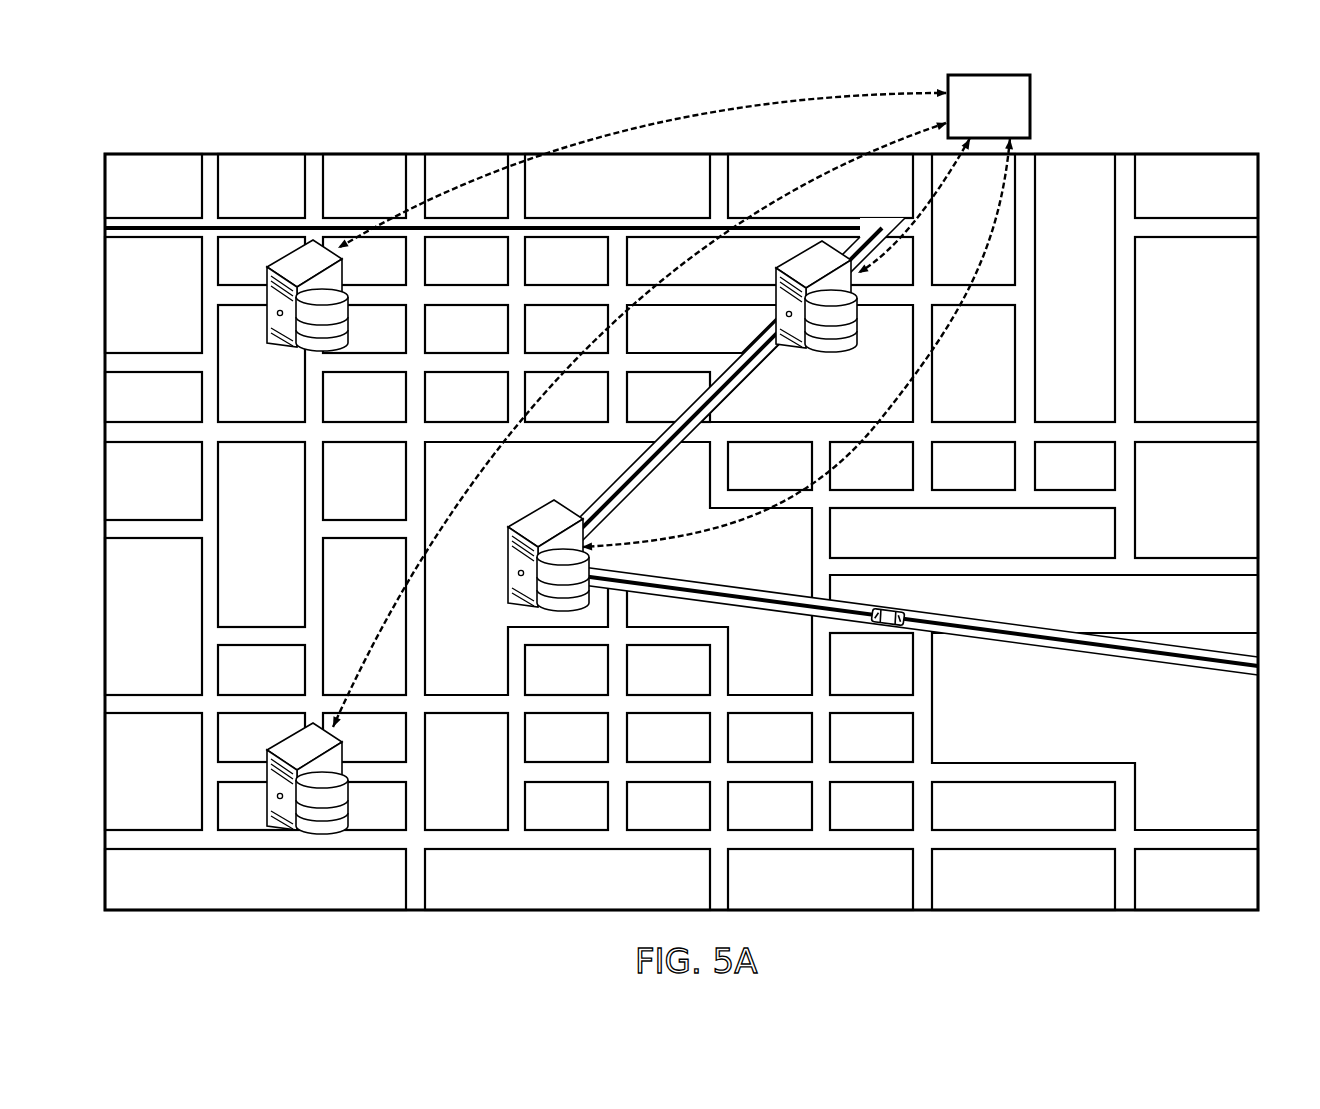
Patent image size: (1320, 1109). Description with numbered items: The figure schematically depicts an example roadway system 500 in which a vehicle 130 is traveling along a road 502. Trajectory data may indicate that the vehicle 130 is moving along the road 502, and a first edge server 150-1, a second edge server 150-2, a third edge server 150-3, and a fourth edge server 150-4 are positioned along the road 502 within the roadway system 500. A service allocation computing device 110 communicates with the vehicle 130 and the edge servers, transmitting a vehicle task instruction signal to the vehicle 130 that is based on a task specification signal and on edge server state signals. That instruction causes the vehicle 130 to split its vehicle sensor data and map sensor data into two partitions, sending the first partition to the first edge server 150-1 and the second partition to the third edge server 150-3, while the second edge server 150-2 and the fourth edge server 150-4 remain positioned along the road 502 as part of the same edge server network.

The service allocation computing device 110 is at (1030, 110).
The vehicle 130 is at (887, 610).
The first edge server 150-1 is at (506, 558).
The second edge server 150-2 is at (828, 350).
The third edge server 150-3 is at (283, 345).
The fourth edge server 150-4 is at (283, 823).
The roadway system 500 is at (1197, 140).
The road 502 is at (1143, 648).